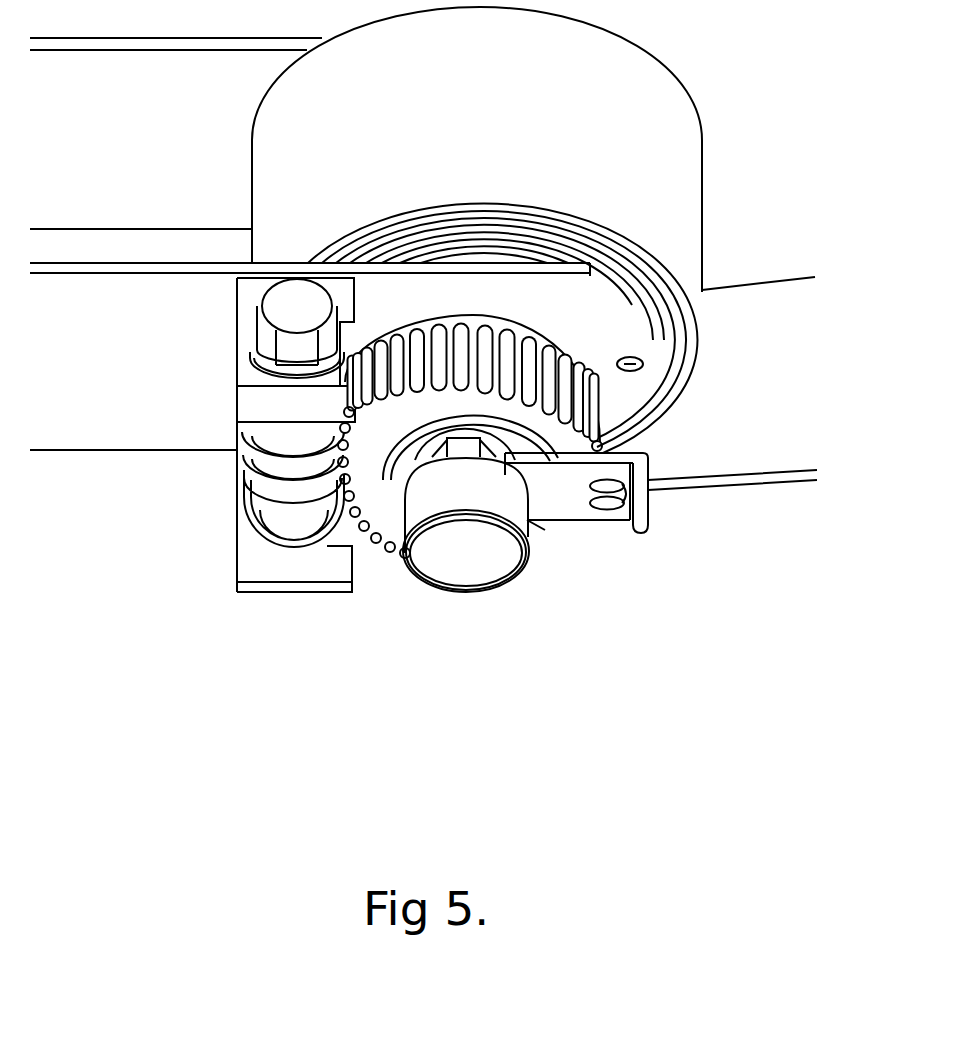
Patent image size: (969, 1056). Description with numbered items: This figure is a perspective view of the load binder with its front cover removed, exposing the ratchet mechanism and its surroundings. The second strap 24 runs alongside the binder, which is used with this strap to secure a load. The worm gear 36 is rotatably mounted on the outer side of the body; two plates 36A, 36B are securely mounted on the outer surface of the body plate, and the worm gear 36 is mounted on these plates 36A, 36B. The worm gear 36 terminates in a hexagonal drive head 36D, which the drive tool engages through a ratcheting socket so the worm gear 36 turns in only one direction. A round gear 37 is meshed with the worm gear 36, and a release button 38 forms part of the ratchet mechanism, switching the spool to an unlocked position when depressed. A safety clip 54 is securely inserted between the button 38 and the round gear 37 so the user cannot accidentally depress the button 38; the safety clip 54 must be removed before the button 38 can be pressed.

The second strap 24 is at (785, 310).
The worm gear 36 is at (253, 478).
The plate 36A is at (290, 403).
The plate 36B is at (300, 570).
The hexagonal drive head 36D is at (293, 305).
The round gear 37 is at (360, 473).
The release button 38 is at (468, 557).
The safety clip 54 is at (610, 520).